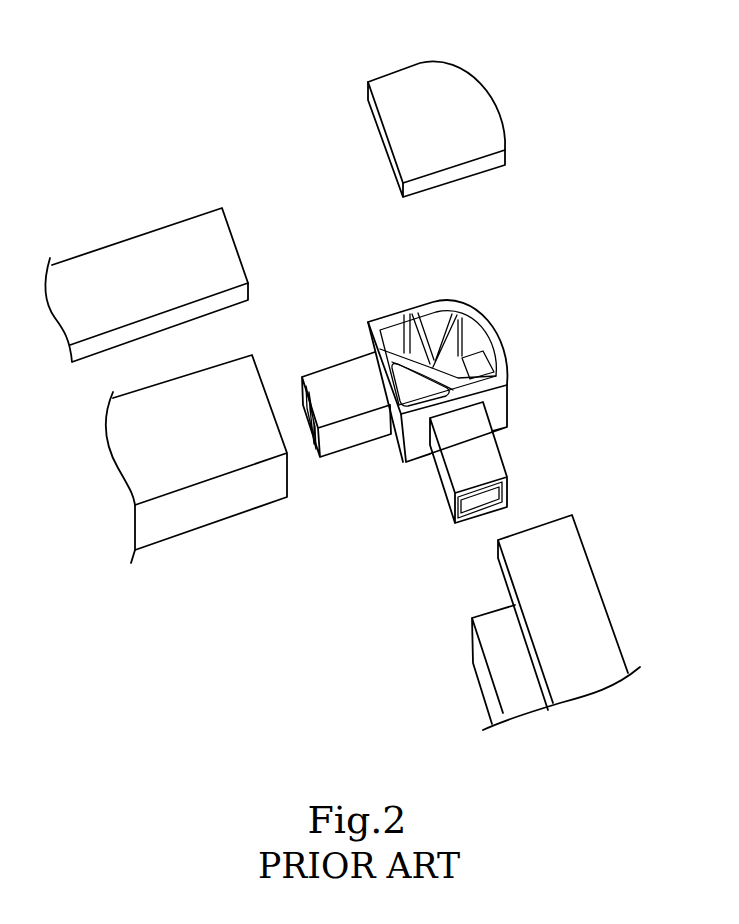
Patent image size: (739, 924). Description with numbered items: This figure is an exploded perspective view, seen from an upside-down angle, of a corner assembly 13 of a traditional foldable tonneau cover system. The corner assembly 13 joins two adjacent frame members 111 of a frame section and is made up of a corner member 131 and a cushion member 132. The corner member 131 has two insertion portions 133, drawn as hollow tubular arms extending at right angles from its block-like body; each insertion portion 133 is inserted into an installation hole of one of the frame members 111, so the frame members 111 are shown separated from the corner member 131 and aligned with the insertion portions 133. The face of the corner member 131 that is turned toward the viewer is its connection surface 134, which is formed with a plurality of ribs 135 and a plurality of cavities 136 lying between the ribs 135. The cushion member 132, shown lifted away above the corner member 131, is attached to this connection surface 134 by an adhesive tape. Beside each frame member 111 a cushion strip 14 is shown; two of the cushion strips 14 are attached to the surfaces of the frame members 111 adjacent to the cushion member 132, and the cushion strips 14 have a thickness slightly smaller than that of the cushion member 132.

The corner assembly 13 is at (348, 256).
The corner member 131 is at (502, 370).
The cushion member 132 is at (488, 124).
The insertion portion 133 is at (490, 455).
The connection surface 134 is at (383, 322).
The rib 135 is at (461, 318).
The cavity 136 is at (473, 336).
The cushion strip 14 is at (165, 240).
The frame member 111 is at (230, 498).